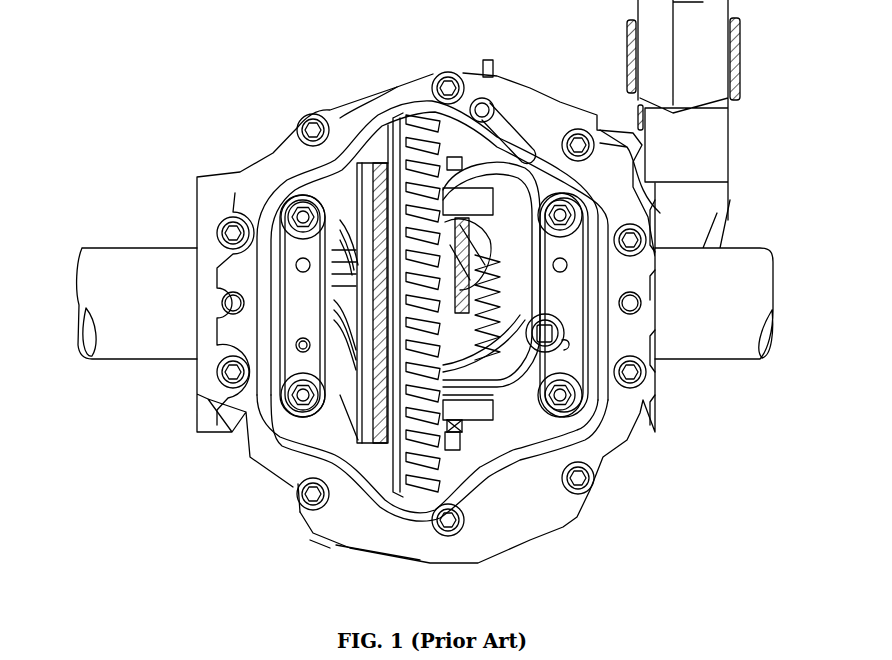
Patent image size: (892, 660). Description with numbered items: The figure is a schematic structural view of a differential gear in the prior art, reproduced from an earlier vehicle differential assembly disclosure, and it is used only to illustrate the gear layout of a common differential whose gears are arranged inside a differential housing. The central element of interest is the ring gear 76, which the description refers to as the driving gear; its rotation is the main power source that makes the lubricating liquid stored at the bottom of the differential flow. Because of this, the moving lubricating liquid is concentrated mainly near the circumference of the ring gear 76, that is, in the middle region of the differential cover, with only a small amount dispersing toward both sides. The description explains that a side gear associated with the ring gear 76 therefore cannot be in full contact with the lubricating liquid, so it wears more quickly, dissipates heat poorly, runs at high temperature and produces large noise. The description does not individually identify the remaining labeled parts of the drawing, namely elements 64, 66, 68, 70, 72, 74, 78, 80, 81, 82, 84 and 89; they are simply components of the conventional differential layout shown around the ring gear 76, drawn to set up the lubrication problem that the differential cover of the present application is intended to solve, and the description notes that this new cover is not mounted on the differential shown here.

The differential housing 64 is at (180, 146).
The lock bolt 66 is at (517, 400).
The axle shafts 68 is at (145, 248).
The differential carrier 70 is at (499, 443).
The pinion housing 72 is at (730, 156).
The differential case 74 is at (497, 172).
The ring gear 76 is at (403, 120).
The lower bearing cap 78 is at (455, 465).
The left bearing boss 80 is at (357, 422).
The cover lip 81 is at (387, 152).
The left bearing cap 82 is at (293, 362).
The right bearing cap 84 is at (606, 390).
The housing bottom wall 89 is at (323, 545).